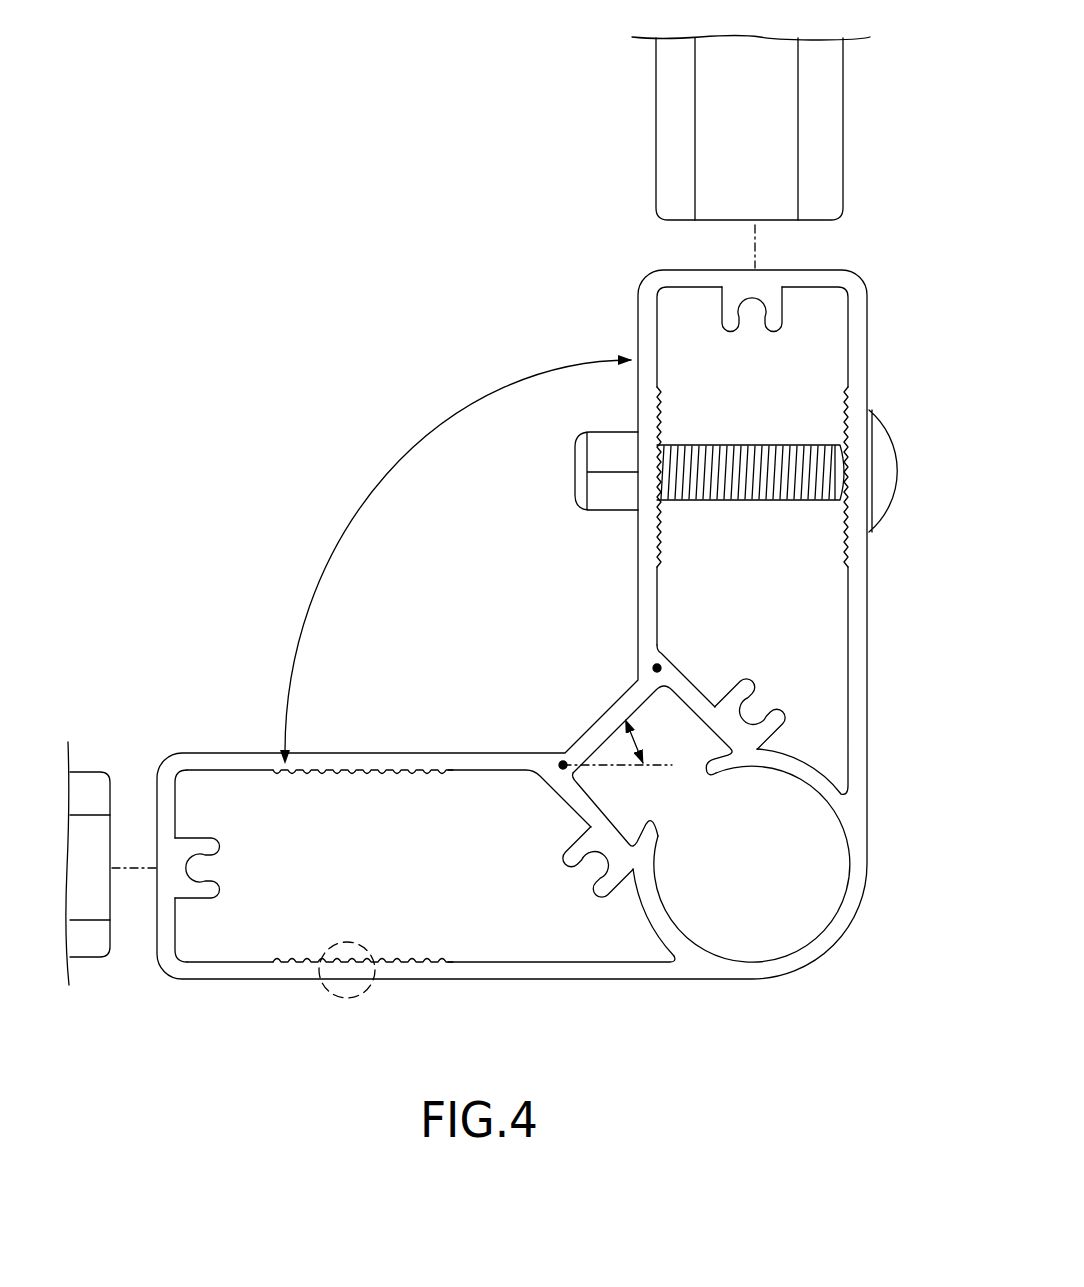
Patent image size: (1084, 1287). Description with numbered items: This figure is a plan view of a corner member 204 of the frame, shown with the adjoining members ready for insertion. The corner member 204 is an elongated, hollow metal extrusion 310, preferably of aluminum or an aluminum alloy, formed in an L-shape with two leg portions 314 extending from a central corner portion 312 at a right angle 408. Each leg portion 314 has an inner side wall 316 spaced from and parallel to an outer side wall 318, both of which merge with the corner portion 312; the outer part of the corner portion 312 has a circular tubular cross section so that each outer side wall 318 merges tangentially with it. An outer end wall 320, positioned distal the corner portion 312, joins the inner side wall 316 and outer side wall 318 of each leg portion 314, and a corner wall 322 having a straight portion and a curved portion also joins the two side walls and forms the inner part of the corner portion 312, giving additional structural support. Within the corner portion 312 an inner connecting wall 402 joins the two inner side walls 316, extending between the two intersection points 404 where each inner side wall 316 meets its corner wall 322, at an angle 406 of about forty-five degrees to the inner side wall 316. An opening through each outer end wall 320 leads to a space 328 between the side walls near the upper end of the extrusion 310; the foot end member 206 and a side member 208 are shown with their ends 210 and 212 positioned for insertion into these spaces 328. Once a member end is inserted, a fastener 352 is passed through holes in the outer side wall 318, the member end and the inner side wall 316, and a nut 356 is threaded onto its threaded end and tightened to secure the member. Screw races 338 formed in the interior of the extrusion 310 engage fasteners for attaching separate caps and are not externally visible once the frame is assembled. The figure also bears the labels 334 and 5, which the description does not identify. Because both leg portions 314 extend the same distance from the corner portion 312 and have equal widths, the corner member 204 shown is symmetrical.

The corner member 204 is at (237, 202).
The foot end member 206 is at (845, 125).
The side member 208 is at (72, 962).
The opposite end 210 is at (680, 188).
The opposite end 212 is at (92, 765).
The metal extrusion 310 is at (650, 985).
The central corner portion 312 is at (775, 878).
The leg portion 314 is at (833, 262).
The inner side wall 316 is at (482, 762).
The outer side wall 318 is at (538, 975).
The outer end wall 320 is at (658, 287).
The corner wall 322 is at (792, 760).
The space 328 is at (736, 430).
The serrations 334 is at (840, 522).
The screw race 338 is at (745, 688).
The fastener 352 is at (880, 432).
The nut 356 is at (607, 512).
The inner connecting wall 402 is at (597, 737).
The intersection point 404 is at (657, 668).
The angle 406 is at (645, 745).
The right angle 408 is at (395, 490).
The detail circle FIG. 5 is at (345, 942).